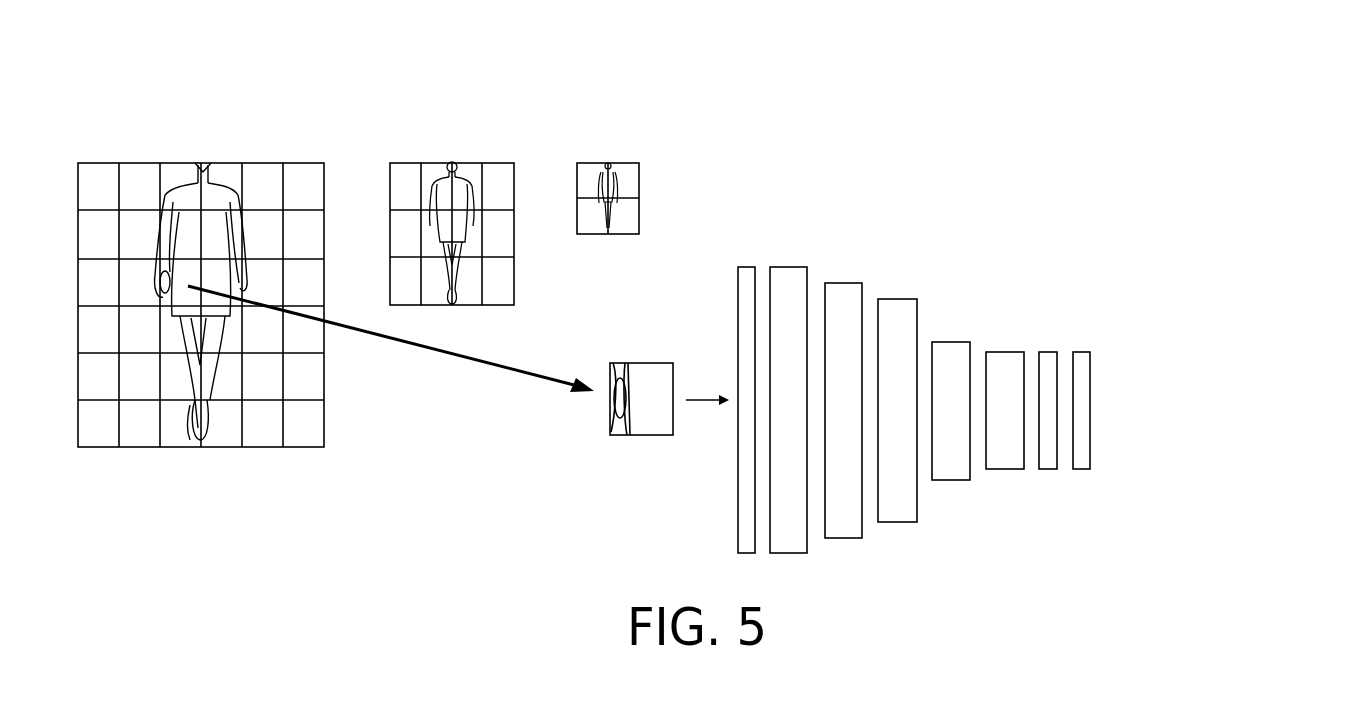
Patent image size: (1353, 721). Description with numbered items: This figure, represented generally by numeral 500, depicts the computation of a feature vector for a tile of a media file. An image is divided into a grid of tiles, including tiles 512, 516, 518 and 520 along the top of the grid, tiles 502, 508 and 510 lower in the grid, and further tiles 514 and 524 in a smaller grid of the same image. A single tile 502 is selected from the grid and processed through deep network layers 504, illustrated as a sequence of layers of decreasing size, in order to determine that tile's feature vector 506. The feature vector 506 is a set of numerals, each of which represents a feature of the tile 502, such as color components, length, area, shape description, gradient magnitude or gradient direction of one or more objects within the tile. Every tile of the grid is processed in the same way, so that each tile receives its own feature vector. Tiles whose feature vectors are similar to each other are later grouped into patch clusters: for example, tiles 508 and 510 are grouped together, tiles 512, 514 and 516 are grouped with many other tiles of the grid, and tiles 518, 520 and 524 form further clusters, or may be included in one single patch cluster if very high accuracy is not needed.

The computation of a feature vector 500 is at (202, 62).
The tile 502 is at (162, 354).
The deep network layers 504 is at (1012, 226).
The feature vector 506 is at (1254, 396).
The tile 508 is at (176, 338).
The tile 510 is at (237, 337).
The tile 512 is at (93, 185).
The tile 514 is at (395, 190).
The tile 516 is at (131, 216).
The tile 518 is at (175, 181).
The tile 520 is at (227, 181).
The tile 524 is at (428, 170).